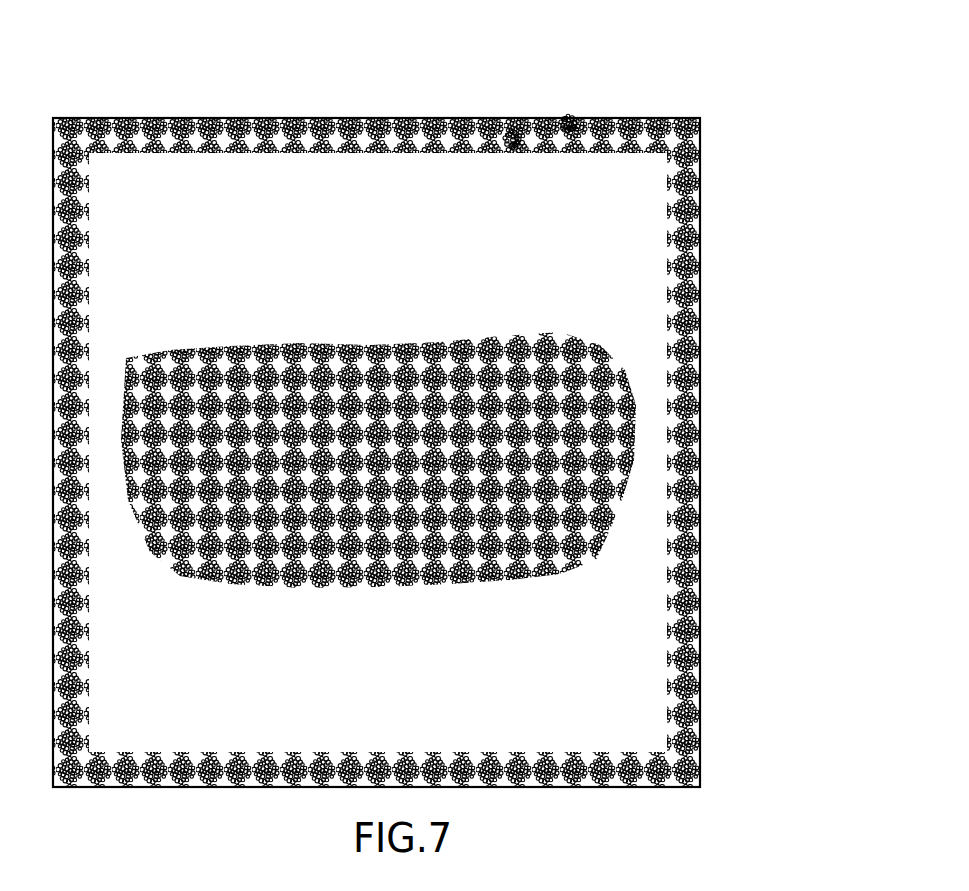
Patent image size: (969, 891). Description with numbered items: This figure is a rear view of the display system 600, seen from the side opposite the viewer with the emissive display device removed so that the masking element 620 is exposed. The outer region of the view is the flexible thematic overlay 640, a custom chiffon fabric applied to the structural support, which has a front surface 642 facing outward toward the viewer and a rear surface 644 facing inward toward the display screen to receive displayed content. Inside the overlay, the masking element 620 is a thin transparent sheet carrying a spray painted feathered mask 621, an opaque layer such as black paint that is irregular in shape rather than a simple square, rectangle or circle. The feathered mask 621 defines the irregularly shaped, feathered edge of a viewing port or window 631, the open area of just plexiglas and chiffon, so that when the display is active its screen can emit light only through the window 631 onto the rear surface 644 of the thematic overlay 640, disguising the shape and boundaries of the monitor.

The display system 600 is at (718, 122).
The flexible thematic overlay 640 is at (457, 113).
The rear surface 644 is at (513, 140).
The front surface 642 is at (568, 122).
The masking element 620 is at (650, 428).
The feathered mask 621 is at (328, 544).
The viewing port or window 631 is at (378, 460).